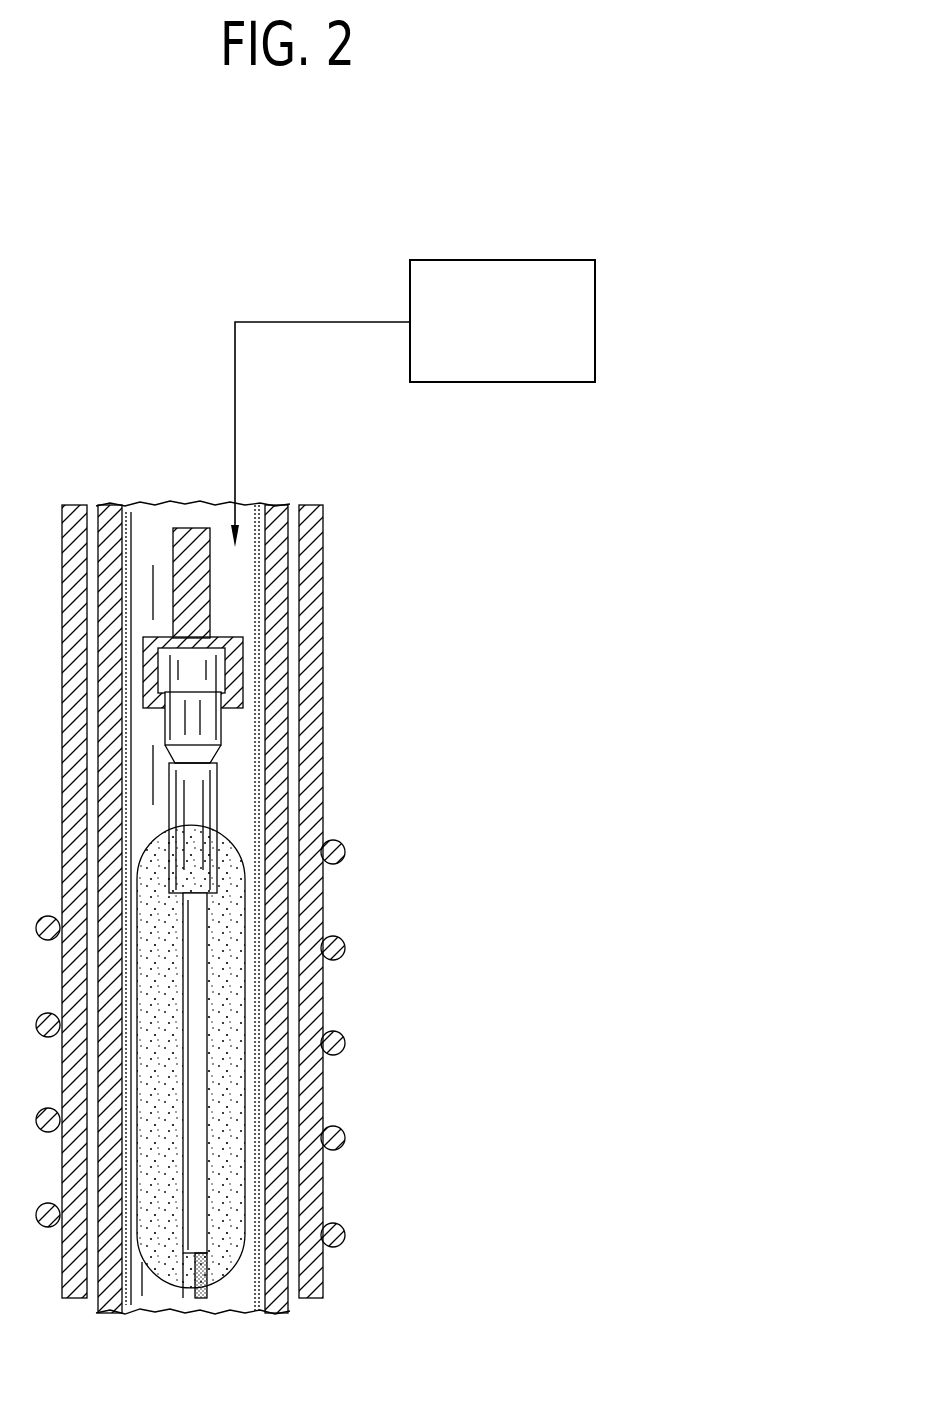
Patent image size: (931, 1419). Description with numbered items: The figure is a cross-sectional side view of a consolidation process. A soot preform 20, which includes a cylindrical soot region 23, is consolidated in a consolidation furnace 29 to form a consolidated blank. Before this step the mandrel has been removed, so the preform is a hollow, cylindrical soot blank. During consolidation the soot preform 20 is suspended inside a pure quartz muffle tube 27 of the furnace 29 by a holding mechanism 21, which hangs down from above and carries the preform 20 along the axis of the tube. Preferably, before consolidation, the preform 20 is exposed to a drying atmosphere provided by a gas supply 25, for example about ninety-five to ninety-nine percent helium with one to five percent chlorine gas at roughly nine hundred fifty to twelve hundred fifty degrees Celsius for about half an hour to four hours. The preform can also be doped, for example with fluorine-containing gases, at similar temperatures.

The soot preform 20 is at (272, 898).
The holding mechanism 21 is at (172, 547).
The cylindrical soot region 23 is at (207, 1016).
The gas supply 25 is at (528, 252).
The muffle tube 27 is at (286, 582).
The consolidation furnace 29 is at (280, 752).